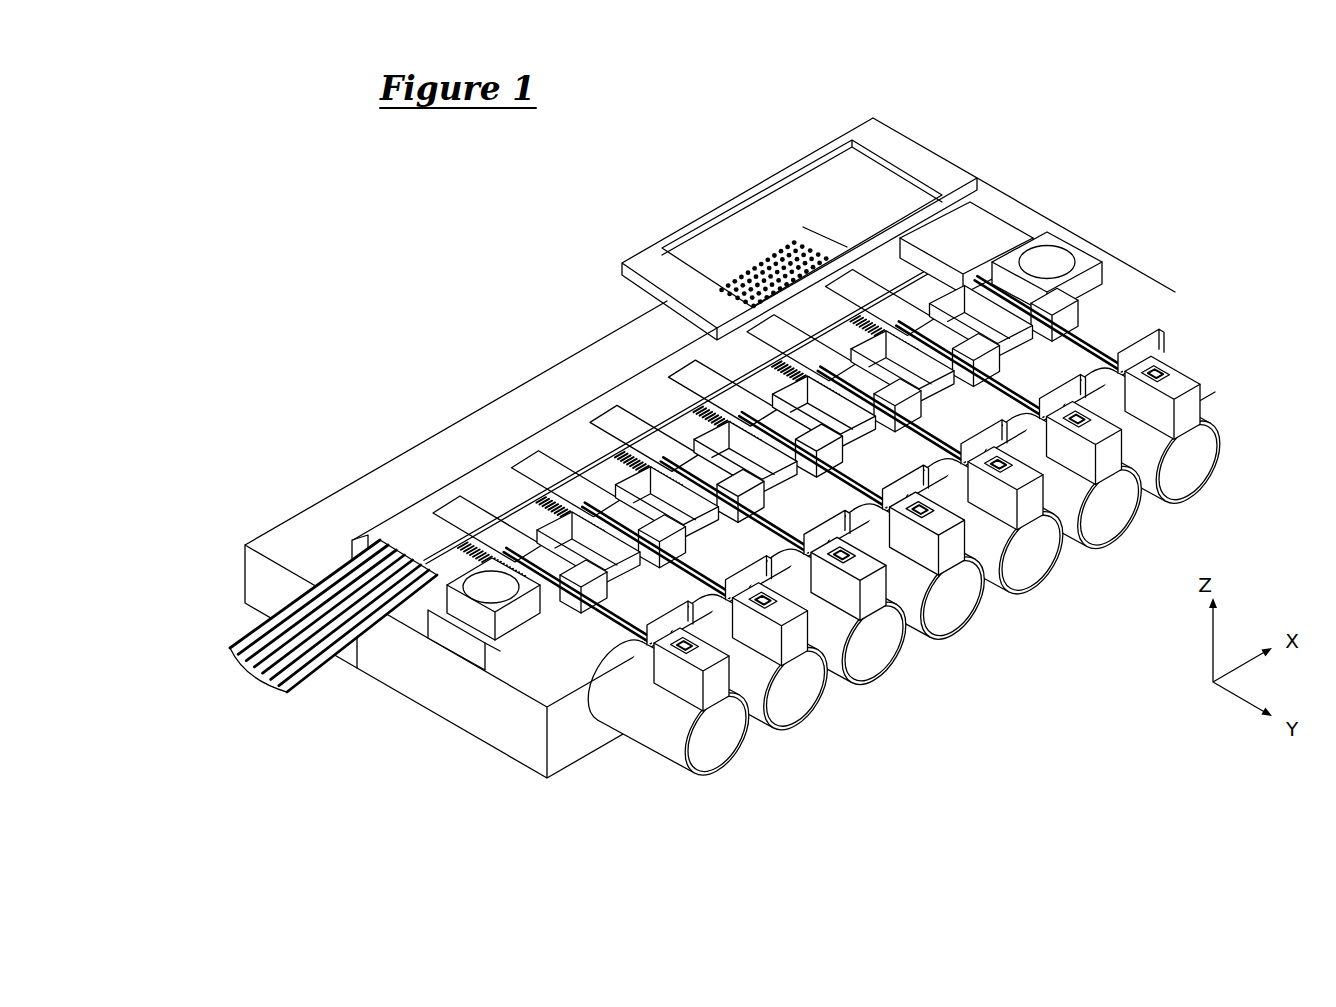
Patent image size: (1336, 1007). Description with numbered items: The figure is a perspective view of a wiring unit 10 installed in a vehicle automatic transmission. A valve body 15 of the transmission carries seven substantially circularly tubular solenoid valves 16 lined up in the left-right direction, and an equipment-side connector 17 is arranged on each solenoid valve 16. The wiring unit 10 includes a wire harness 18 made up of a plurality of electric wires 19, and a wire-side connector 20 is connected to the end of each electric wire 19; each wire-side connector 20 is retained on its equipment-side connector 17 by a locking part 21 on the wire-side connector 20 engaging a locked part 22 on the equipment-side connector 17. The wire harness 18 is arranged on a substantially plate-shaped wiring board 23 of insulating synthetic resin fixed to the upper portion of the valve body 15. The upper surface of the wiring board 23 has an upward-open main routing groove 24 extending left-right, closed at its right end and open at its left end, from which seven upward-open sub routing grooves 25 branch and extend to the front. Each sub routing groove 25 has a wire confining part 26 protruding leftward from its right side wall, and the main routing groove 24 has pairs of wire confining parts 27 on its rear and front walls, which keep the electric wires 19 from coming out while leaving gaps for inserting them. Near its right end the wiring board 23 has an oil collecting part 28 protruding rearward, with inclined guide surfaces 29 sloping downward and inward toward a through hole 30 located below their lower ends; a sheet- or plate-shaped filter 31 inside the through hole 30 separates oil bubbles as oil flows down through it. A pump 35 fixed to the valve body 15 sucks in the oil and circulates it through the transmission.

The wiring unit 10 is at (723, 404).
The valve body 15 is at (445, 690).
The solenoid valve 16 is at (1198, 467).
The equipment-side connector 17 is at (1195, 405).
The wire harness 18 is at (244, 640).
The electric wire 19 is at (1100, 350).
The wire-side connector 20 is at (1133, 368).
The locking part 21 is at (1160, 368).
The locked part 22 is at (1180, 375).
The wiring board 23 is at (633, 388).
The main routing groove 24 is at (530, 462).
The sub routing groove 25 is at (1062, 305).
The wire confining part 26 is at (1008, 290).
The wire confining part 27 is at (617, 468).
The oil collecting part 28 is at (655, 257).
The inclined guide surface 29 is at (856, 182).
The through hole 30 is at (803, 227).
The filter 31 is at (752, 280).
The pump 35 is at (302, 530).